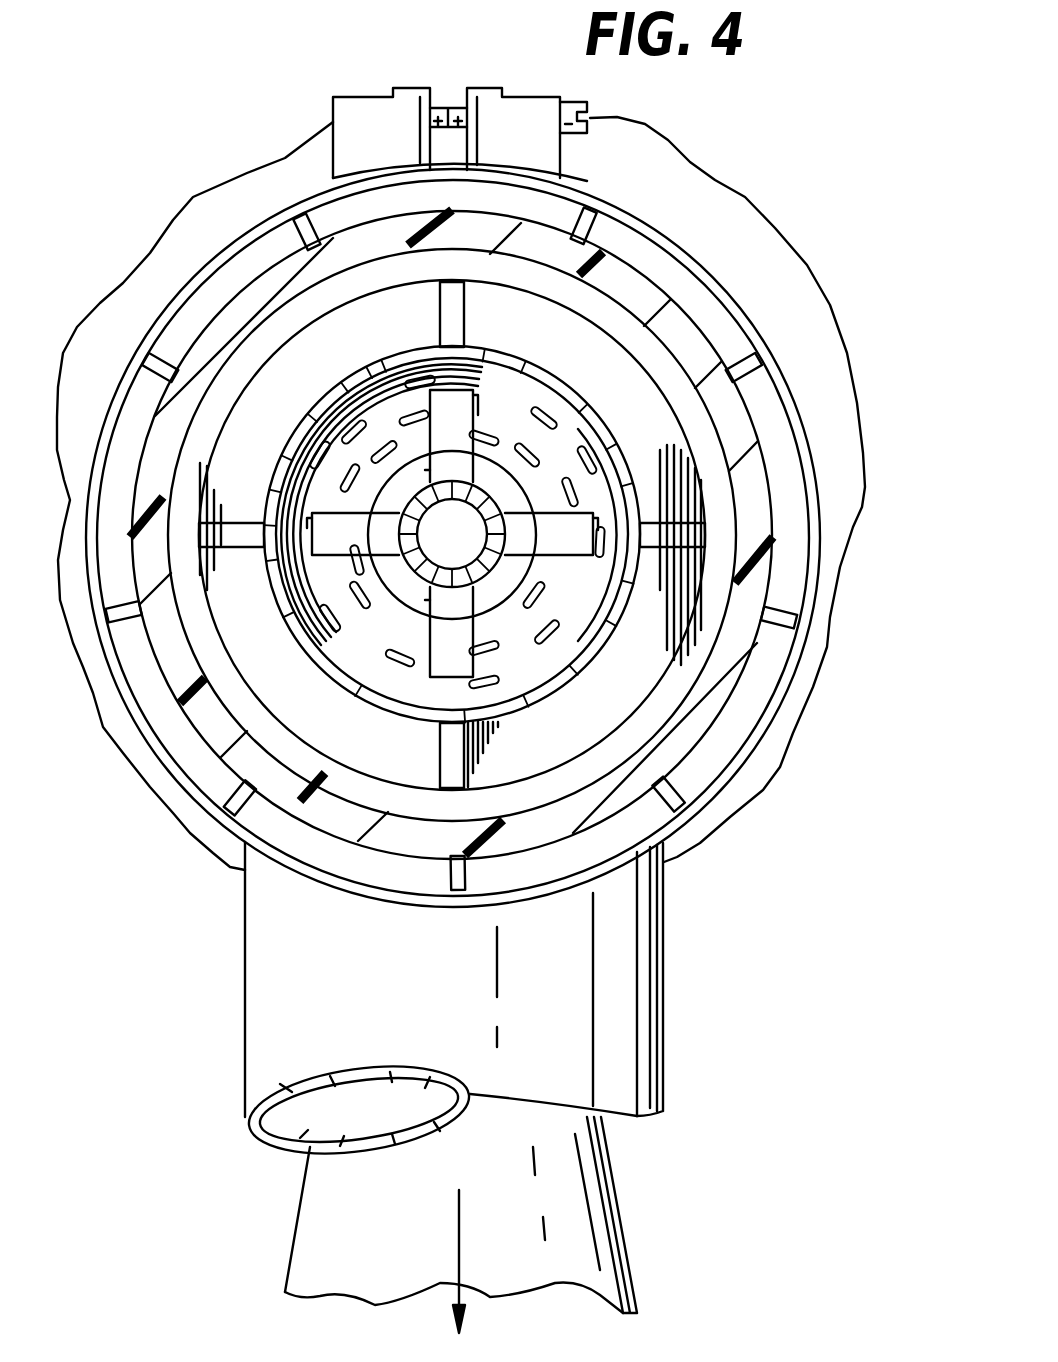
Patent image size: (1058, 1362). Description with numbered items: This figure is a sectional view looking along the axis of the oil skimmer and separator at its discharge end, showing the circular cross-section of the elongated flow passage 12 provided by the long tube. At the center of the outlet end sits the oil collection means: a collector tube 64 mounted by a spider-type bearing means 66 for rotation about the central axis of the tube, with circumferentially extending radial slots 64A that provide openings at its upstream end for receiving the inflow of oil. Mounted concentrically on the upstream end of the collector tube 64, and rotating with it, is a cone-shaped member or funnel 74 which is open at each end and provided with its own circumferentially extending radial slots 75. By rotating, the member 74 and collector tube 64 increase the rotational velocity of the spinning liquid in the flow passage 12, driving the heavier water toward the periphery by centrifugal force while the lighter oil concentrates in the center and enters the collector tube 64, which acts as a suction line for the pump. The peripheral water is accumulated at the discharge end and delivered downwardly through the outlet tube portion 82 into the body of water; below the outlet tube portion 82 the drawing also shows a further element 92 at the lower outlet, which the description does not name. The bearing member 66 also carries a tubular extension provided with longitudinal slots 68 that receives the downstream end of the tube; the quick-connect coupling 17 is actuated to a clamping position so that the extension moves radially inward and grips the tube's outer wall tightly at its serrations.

The flow passage 12 is at (594, 355).
The quick-connect coupling 17 is at (477, 108).
The collector tube 64 is at (435, 573).
The radial slots 64A is at (453, 480).
The spider-type bearing means 66 is at (656, 700).
The longitudinal slots 68 is at (593, 223).
The cone-shaped member 74 is at (292, 440).
The radial slots 75 is at (305, 480).
The outlet tube portion 82 is at (650, 1003).
The outlet chute 92 is at (608, 1245).